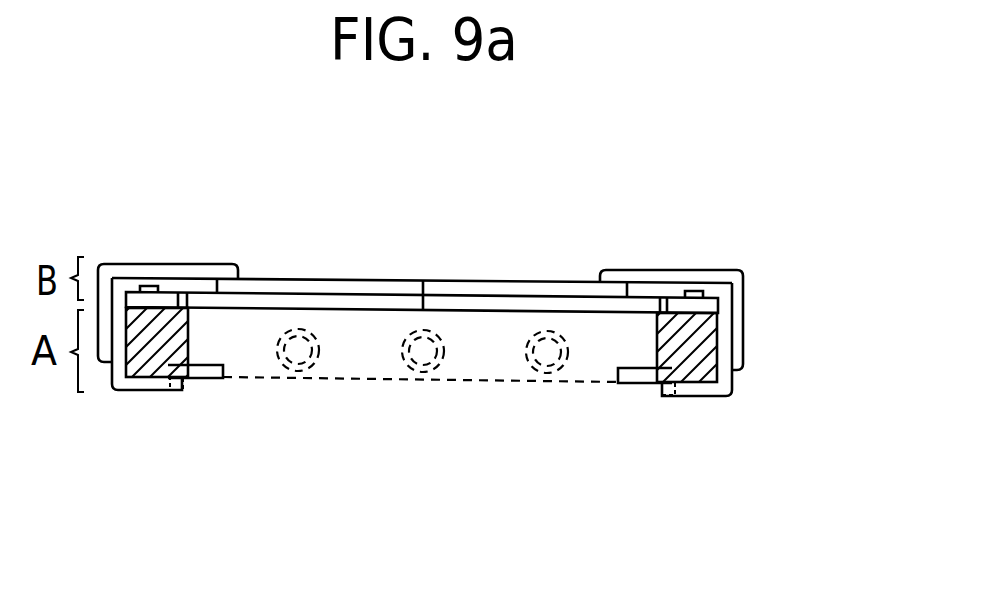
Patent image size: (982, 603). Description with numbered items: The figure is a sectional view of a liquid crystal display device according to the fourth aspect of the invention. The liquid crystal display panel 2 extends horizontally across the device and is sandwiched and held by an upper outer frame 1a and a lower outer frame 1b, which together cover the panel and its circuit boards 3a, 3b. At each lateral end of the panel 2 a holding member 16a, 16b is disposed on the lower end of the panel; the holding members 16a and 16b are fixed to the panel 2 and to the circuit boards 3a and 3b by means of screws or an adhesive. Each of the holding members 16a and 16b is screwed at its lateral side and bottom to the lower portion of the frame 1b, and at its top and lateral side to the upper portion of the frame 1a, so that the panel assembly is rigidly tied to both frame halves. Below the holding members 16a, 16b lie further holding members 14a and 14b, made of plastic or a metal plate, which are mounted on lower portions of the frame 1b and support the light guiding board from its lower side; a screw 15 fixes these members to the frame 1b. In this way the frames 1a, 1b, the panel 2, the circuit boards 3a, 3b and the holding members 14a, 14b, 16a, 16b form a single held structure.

The frame 1a is at (103, 263).
The frame 1b is at (113, 391).
The liquid crystal display panel 2 is at (430, 281).
The circuit board 3a is at (171, 300).
The circuit board 3b is at (710, 304).
The holding member 14a is at (212, 372).
The holding member 14b is at (635, 378).
The screw 15 is at (177, 390).
The holding member 16a is at (152, 370).
The holding member 16b is at (704, 348).